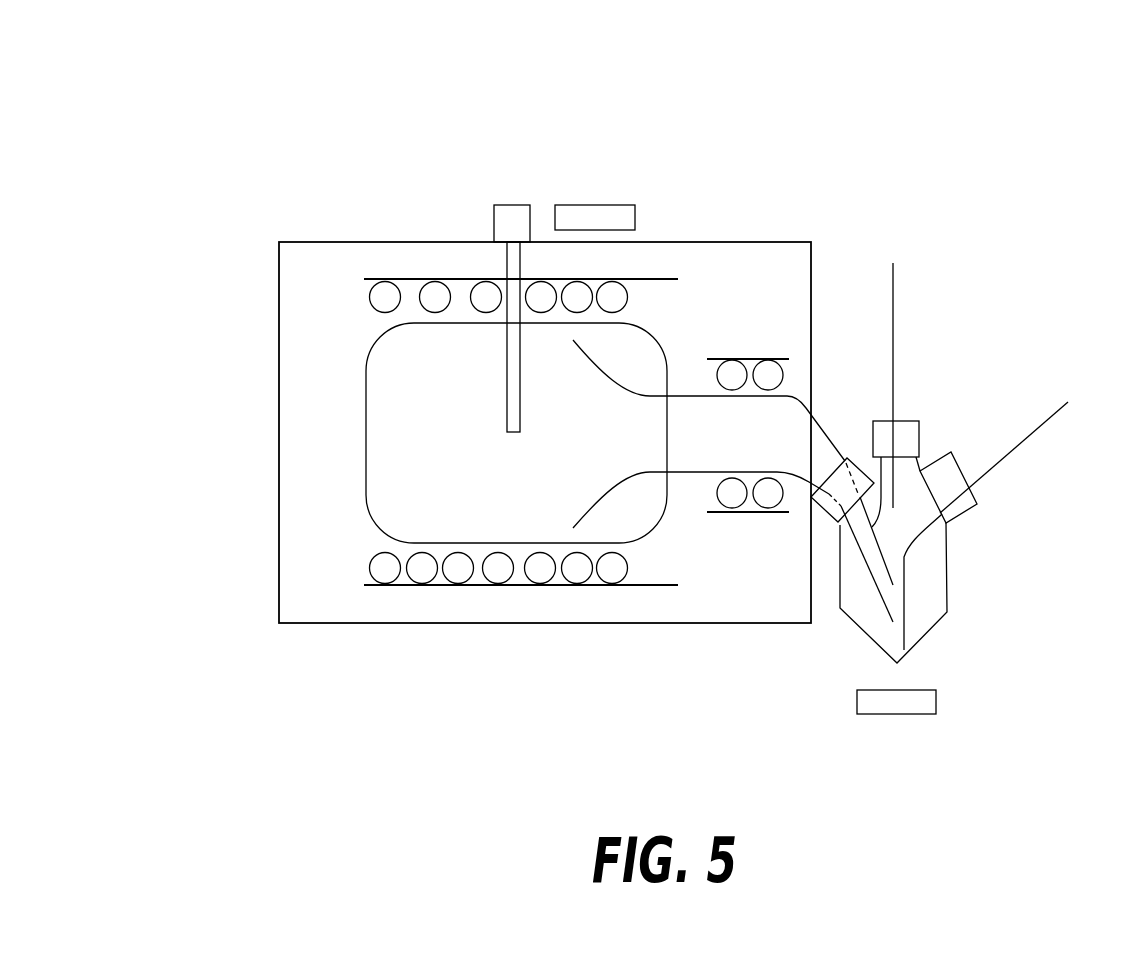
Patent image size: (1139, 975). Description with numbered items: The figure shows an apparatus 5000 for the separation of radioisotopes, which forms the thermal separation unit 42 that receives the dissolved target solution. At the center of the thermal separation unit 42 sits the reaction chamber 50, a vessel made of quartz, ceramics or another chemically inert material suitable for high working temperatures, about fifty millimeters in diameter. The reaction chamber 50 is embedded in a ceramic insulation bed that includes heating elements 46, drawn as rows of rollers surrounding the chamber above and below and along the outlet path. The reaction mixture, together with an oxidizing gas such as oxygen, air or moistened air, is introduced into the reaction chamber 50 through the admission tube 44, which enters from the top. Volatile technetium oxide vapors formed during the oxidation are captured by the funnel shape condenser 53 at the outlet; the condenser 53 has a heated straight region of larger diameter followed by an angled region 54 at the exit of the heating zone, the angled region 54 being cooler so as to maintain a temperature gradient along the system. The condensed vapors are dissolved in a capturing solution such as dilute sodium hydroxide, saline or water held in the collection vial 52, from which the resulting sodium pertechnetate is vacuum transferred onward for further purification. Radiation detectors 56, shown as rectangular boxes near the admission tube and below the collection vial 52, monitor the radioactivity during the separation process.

The apparatus for separation of radioisotopes 5000 is at (266, 118).
The thermal separation unit 42 is at (367, 242).
The admission tube 44 is at (508, 240).
The heating elements 46 is at (740, 388).
The reaction chamber 50 is at (408, 417).
The collection vial 52 is at (933, 559).
The funnel shape condenser 53 is at (825, 536).
The angled region 54 is at (870, 592).
The radiation detectors 56 is at (608, 203).